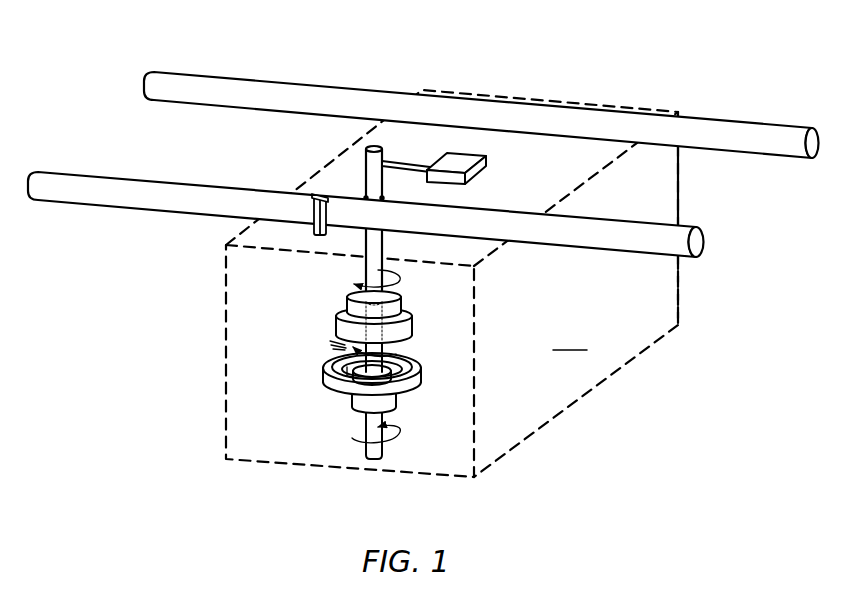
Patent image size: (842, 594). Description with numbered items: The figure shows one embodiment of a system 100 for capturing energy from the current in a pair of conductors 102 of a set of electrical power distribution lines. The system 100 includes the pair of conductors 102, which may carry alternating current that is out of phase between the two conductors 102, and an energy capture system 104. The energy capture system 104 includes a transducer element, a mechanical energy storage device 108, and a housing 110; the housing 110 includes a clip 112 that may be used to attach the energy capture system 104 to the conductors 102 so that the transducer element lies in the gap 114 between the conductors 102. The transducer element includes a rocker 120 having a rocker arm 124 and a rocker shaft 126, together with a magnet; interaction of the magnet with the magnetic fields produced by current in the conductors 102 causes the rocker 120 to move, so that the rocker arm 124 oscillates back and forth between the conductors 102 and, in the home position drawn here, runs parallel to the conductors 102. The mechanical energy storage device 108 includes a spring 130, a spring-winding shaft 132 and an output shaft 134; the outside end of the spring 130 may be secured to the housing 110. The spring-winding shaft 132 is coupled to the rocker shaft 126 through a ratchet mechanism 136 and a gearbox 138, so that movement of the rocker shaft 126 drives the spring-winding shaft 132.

The system 100 is at (423, 262).
The conductors 102 is at (731, 123).
The energy capture system 104 is at (198, 305).
The mechanical energy storage device 108 is at (355, 397).
The housing 110 is at (571, 339).
The clip 112 is at (318, 194).
The gap 114 is at (685, 180).
The rocker 120 is at (404, 179).
The rocker arm 124 is at (421, 163).
The rocker shaft 126 is at (366, 268).
The spring 130 is at (325, 378).
The spring-winding shaft 132 is at (396, 354).
The output shaft 134 is at (372, 462).
The ratchet mechanism 136 is at (401, 308).
The gearbox 138 is at (337, 321).